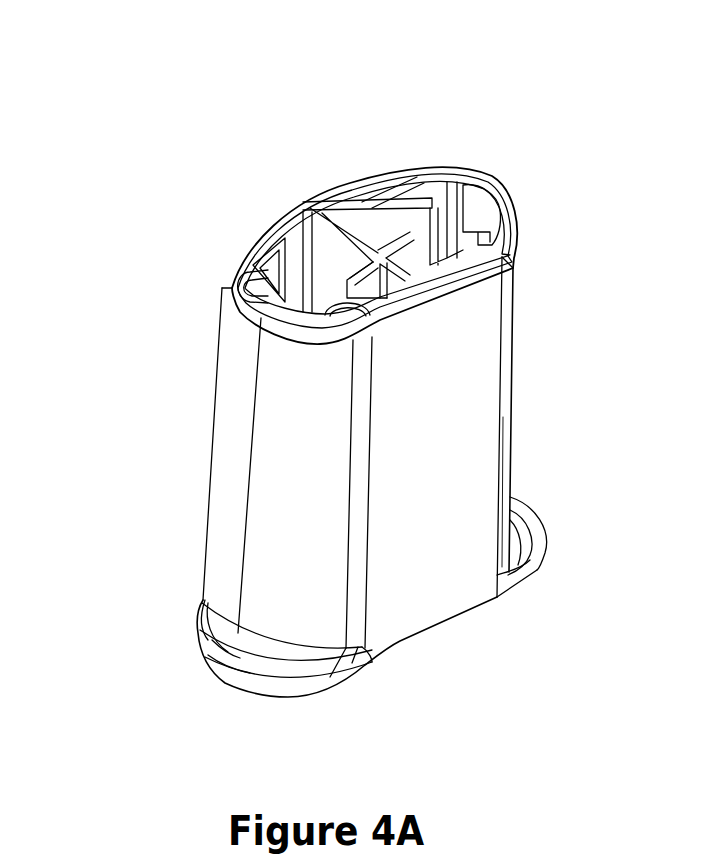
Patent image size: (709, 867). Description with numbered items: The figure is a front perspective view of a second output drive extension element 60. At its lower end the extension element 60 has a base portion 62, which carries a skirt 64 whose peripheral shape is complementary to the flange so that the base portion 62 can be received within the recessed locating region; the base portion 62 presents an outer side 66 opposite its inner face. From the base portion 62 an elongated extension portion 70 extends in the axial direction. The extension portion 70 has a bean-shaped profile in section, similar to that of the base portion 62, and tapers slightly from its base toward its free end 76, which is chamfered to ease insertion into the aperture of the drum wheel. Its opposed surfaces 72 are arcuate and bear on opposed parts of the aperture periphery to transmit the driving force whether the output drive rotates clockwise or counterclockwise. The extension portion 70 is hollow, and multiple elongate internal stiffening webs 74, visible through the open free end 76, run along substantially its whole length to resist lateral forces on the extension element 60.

The second output drive extension element 60 is at (495, 136).
The base portion 62 is at (258, 671).
The skirt 64 is at (537, 570).
The outer side 66 is at (232, 657).
The elongated extension portion 70 is at (220, 505).
The opposed surfaces 72 is at (518, 247).
The internal stiffening webs 74 is at (397, 217).
The chamfered free end 76 is at (240, 310).